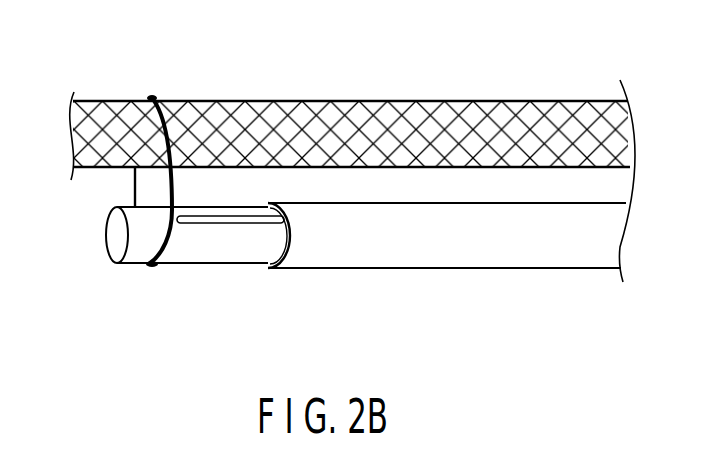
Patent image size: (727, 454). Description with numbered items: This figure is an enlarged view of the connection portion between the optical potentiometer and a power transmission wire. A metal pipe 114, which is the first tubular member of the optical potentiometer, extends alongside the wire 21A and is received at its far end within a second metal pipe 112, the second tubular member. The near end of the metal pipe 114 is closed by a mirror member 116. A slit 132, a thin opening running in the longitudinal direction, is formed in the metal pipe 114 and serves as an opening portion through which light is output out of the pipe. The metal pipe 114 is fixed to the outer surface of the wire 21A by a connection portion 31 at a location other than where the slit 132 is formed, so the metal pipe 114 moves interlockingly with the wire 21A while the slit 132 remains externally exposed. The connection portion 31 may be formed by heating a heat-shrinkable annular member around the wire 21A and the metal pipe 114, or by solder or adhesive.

The wire 21A is at (290, 100).
The connection portion 31 is at (152, 98).
The metal pipe 112 is at (520, 268).
The metal pipe 114 is at (238, 267).
The mirror member 116 is at (108, 238).
The slit 132 is at (197, 222).